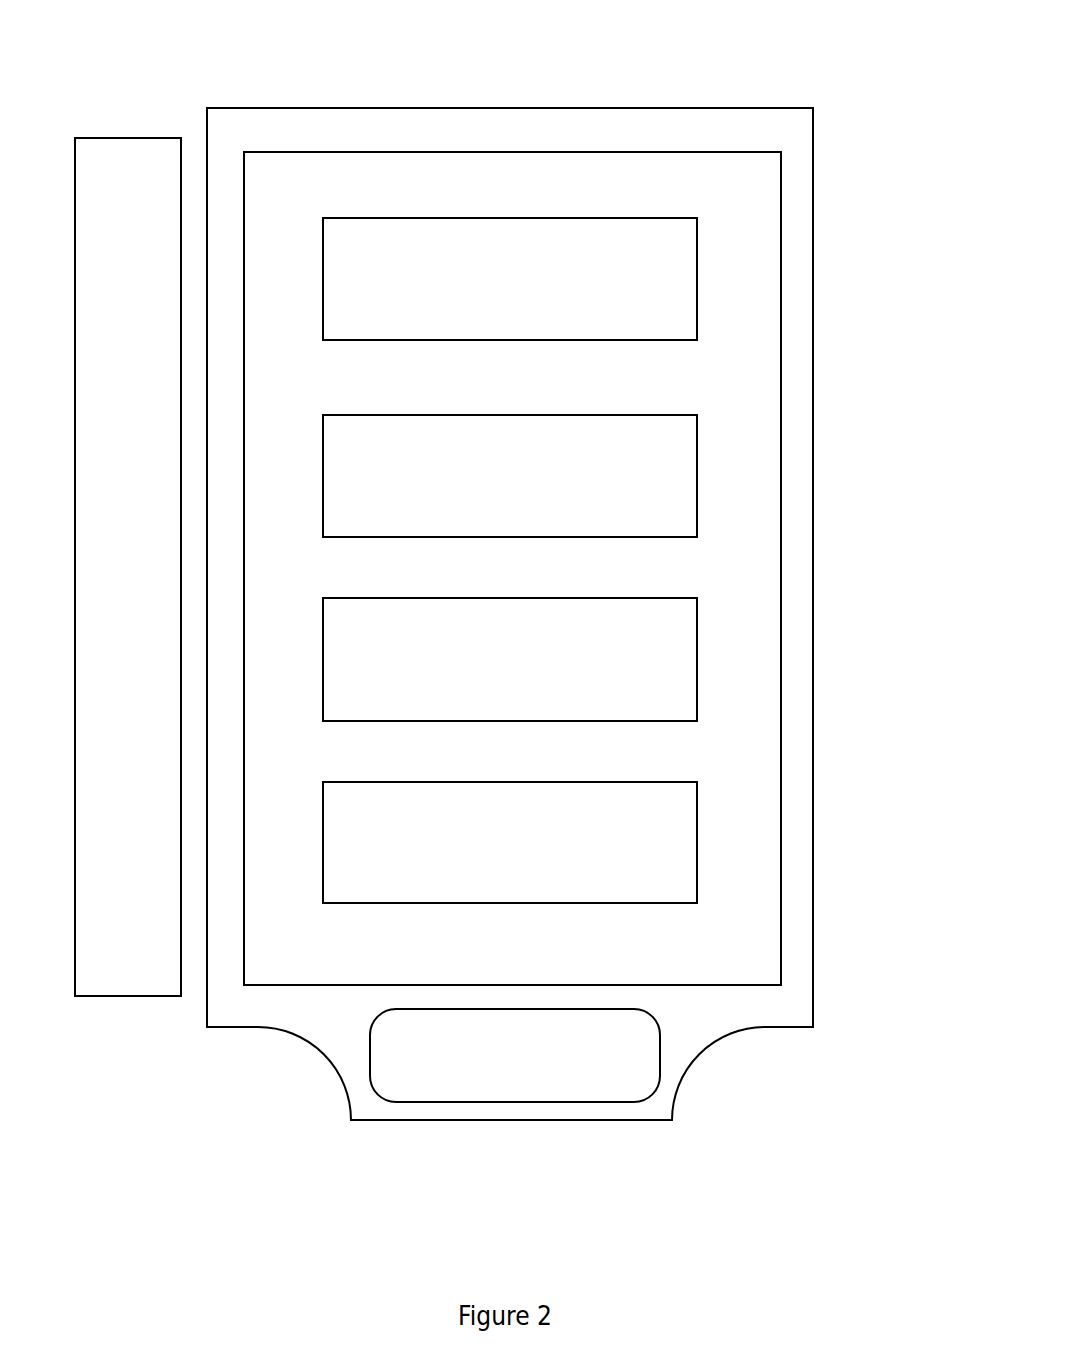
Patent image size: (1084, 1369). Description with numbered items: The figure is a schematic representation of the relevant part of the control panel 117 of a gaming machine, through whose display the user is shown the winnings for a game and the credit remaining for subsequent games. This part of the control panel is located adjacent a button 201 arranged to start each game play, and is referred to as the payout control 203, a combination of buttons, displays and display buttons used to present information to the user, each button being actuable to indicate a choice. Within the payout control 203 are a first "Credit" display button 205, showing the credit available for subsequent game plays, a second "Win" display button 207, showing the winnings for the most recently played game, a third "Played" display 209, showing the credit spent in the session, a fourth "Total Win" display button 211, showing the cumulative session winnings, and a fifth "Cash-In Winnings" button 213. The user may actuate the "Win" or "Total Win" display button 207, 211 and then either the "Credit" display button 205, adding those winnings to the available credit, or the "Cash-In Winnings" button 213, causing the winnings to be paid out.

The control panel 117 is at (848, 852).
The button 201 is at (137, 967).
The payout control 203 is at (655, 127).
The "Credit" display button 205 is at (670, 280).
The "Win" display button 207 is at (678, 463).
The "Played" display 209 is at (677, 647).
The "Total Win" display button 211 is at (670, 843).
The "Cash-In Winnings" button 213 is at (460, 1085).